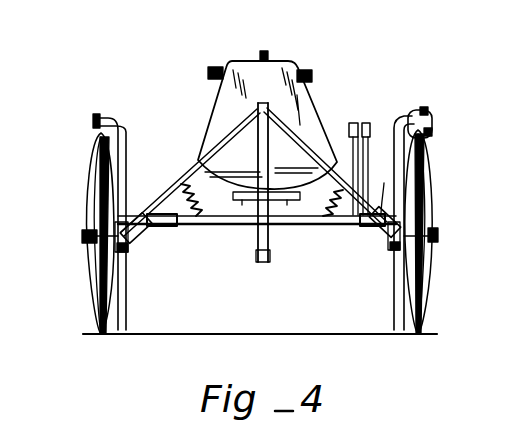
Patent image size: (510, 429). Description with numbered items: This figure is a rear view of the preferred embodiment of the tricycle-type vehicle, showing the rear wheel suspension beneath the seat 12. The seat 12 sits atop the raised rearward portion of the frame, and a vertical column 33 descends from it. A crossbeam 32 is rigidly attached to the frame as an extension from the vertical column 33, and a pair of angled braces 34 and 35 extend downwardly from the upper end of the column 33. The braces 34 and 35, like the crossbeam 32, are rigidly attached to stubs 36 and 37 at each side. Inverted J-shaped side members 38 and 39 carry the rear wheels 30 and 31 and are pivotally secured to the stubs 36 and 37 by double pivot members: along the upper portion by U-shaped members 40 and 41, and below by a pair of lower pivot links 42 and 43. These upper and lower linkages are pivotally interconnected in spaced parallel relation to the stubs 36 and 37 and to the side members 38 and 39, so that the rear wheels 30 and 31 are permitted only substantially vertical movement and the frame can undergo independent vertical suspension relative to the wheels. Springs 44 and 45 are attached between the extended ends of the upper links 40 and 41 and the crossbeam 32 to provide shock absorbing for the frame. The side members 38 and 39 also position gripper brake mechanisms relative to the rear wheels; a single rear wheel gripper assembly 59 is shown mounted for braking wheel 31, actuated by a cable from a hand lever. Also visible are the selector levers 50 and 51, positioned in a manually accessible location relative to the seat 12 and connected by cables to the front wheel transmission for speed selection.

The seat 12 is at (270, 73).
The rear wheel 30 is at (97, 328).
The rear wheel 31 is at (427, 304).
The crossbeam 32 is at (224, 228).
The vertical column 33 is at (262, 268).
The angled brace 34 is at (181, 176).
The angled brace 35 is at (311, 148).
The stub 36 is at (152, 232).
The stub 37 is at (376, 236).
The inverted J-shaped side member 38 is at (126, 116).
The inverted J-shaped side member 39 is at (404, 116).
The U-shaped member 40 is at (136, 222).
The U-shaped member 41 is at (383, 198).
The lower pivot link 42 is at (143, 244).
The lower pivot link 43 is at (390, 250).
The spring 44 is at (198, 230).
The spring 45 is at (312, 212).
The selector lever 50 is at (368, 124).
The selector lever 51 is at (356, 123).
The rear wheel gripper assembly 59 is at (432, 122).